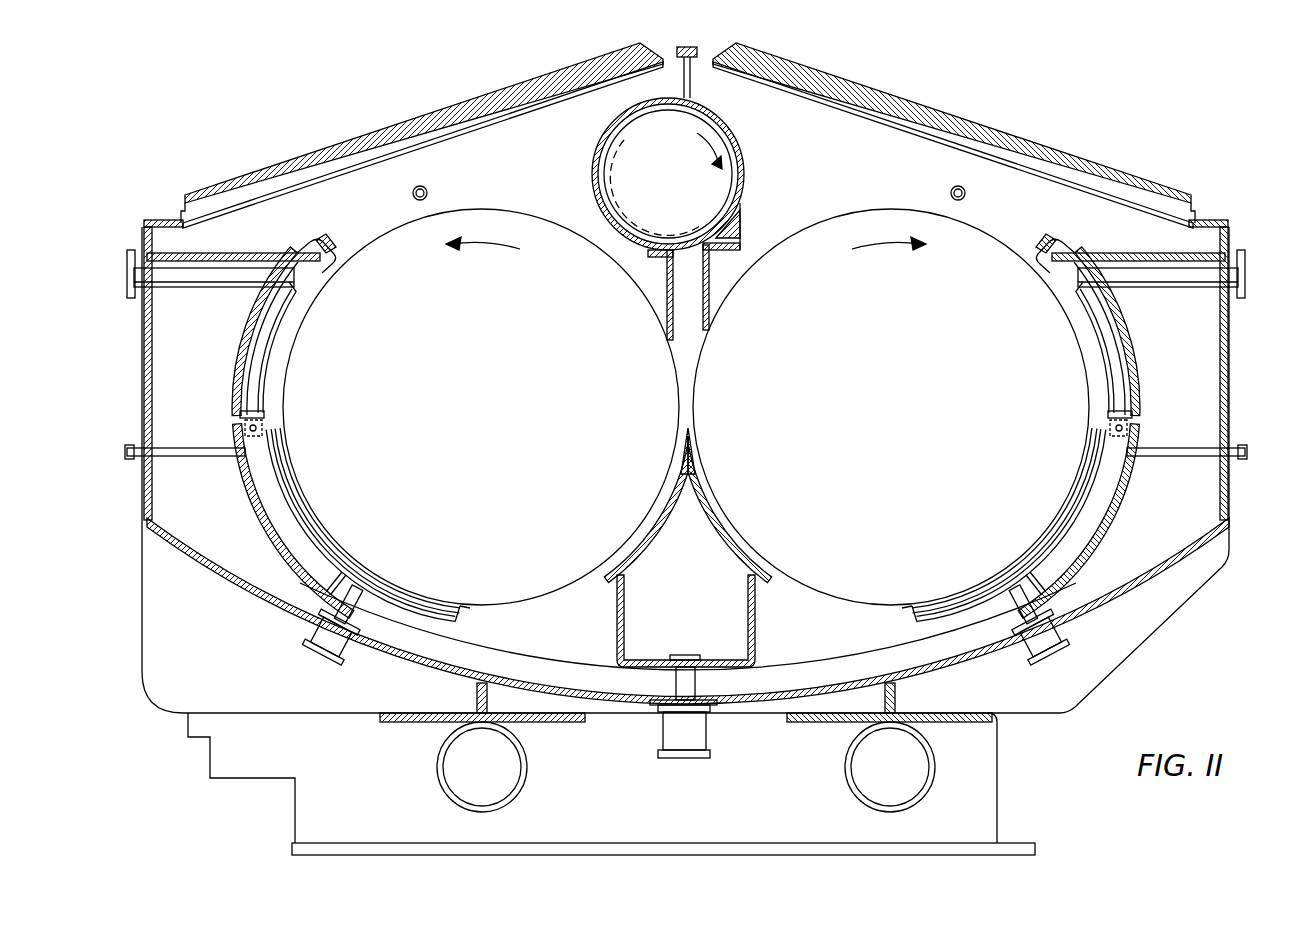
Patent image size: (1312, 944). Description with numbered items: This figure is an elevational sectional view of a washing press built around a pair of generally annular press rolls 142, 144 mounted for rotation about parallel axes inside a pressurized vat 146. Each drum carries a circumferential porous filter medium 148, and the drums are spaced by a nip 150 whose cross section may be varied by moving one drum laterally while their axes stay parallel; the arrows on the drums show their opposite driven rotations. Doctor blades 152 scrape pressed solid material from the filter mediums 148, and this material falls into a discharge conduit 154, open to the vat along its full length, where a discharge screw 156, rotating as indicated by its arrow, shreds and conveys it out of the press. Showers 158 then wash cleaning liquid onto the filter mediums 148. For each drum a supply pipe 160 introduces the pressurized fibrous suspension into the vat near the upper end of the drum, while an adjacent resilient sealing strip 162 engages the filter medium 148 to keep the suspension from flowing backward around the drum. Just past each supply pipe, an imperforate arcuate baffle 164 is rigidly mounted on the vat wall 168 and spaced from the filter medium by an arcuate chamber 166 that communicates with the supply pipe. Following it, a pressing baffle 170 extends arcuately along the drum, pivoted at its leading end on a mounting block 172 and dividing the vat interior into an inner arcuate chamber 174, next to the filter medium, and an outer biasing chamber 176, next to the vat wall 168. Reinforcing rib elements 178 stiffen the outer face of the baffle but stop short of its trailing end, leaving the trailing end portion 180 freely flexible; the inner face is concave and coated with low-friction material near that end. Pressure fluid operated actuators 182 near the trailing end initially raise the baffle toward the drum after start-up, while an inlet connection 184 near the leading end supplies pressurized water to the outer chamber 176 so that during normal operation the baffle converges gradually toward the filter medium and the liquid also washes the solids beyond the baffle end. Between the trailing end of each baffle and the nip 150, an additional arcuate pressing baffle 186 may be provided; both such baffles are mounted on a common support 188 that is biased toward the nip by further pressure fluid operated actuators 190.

The press roll 142 is at (548, 594).
The press roll 144 is at (842, 590).
The vat 146 is at (910, 666).
The filter medium 148 is at (495, 211).
The nip 150 is at (691, 388).
The doctor blade 152 is at (666, 292).
The discharge conduit 154 is at (732, 185).
The discharge screw 156 is at (718, 194).
The shower 158 is at (419, 188).
The supply pipe 160 is at (225, 272).
The resilient sealing strip 162 is at (322, 272).
The arcuate baffle 164 is at (266, 382).
The arcuate chamber 166 is at (291, 330).
The vat wall 168 is at (776, 692).
The pressing baffle 170 is at (283, 484).
The mounting block 172 is at (246, 428).
The inner arcuate chamber 174 is at (317, 527).
The outer arcuate chamber 176 is at (283, 533).
The reinforcing rib element 178 is at (316, 552).
The trailing end portion 180 is at (470, 580).
The pressure fluid operated actuator 182 is at (345, 652).
The inlet connection 184 is at (200, 458).
The arcuate pressing baffle 186 is at (640, 542).
The common support 188 is at (641, 668).
The pressure fluid operated actuator 190 is at (700, 752).